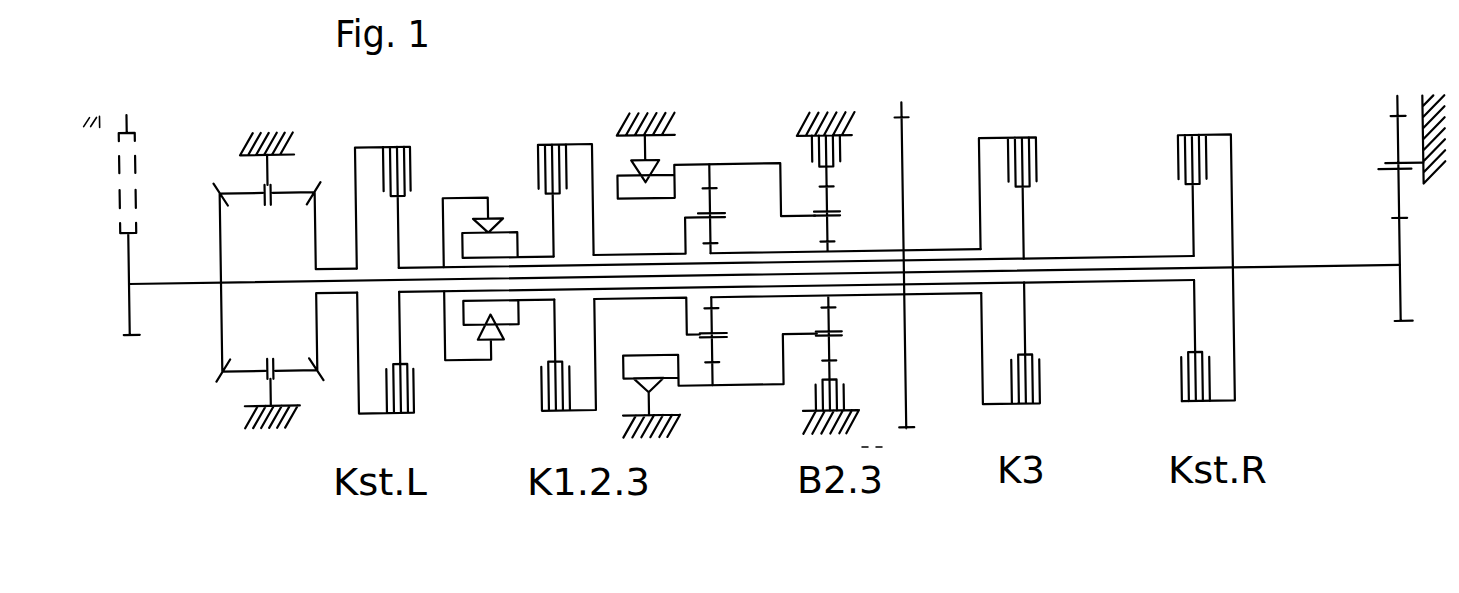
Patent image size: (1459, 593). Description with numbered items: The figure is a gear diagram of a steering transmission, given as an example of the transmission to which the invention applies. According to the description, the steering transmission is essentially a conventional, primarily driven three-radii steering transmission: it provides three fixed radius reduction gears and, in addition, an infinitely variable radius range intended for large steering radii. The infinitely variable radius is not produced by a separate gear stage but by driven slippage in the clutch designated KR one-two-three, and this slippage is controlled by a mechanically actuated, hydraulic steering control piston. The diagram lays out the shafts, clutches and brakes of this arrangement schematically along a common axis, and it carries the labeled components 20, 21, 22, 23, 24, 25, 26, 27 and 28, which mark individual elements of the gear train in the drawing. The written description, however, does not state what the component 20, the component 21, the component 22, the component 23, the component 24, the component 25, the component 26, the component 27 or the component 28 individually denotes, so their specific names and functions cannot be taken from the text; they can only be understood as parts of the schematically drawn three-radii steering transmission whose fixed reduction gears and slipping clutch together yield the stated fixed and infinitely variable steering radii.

The bearing 20 is at (845, 272).
The carrier 21 is at (717, 274).
The hub bearing 22 is at (659, 275).
The clutch hub 23 is at (534, 244).
The hollow shaft 24 is at (1108, 252).
The input coupling 25 is at (339, 250).
The input bearing 26 is at (287, 355).
The output shaft 27 is at (1315, 251).
The output bearing 28 is at (1398, 208).